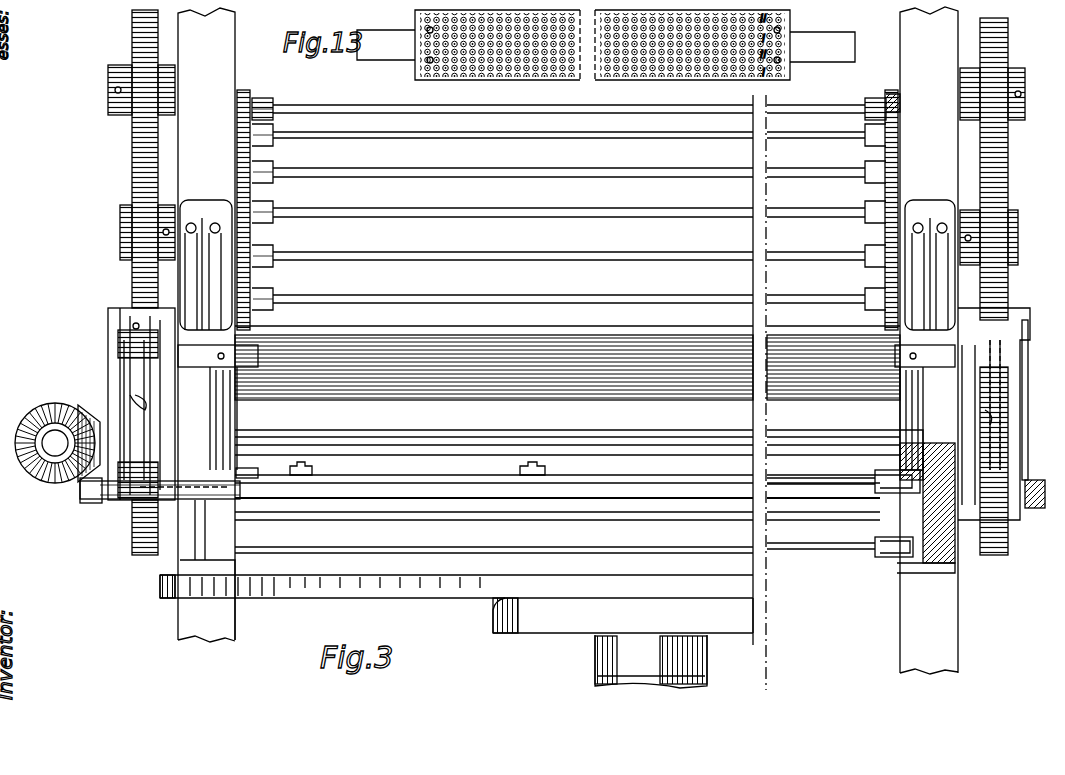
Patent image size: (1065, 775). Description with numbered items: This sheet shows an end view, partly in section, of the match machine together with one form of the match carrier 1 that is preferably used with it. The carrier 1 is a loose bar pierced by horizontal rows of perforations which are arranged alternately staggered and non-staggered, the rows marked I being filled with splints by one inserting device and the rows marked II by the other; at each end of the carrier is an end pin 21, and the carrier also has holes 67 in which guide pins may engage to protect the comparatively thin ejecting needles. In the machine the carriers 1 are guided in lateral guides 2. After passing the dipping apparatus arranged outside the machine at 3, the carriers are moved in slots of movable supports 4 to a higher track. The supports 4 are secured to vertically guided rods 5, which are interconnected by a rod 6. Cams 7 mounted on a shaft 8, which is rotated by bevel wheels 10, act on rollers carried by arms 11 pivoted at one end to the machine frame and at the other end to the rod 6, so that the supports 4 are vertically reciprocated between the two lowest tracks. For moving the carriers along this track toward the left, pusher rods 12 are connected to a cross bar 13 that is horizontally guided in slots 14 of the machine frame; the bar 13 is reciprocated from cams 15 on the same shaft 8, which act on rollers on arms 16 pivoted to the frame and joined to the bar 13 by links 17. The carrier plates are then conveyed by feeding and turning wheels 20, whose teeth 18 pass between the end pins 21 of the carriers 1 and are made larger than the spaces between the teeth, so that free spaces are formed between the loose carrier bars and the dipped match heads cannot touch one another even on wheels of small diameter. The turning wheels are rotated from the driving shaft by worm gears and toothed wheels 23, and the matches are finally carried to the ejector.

In FIG. 13, the match carrier 1 is at (632, 14).
In FIG. 3, the match carrier 1 is at (781, 545).
In FIG. 3, the lateral guide 2 is at (898, 100).
In FIG. 3, the dipping apparatus 3 is at (492, 598).
In FIG. 3, the movable support 4 is at (248, 468).
In FIG. 3, the vertically guided rod 5 is at (216, 400).
In FIG. 3, the rod 6 is at (515, 350).
In FIG. 3, the cam 7 is at (135, 400).
In FIG. 3, the shaft 8 is at (634, 437).
In FIG. 3, the bevel wheel 10 is at (80, 478).
In FIG. 3, the arm 11 is at (126, 372).
In FIG. 3, the pusher rod 12 is at (300, 465).
In FIG. 3, the cross bar 13 is at (385, 480).
In FIG. 3, the slot 14 is at (203, 506).
In FIG. 3, the cam 15 is at (900, 420).
In FIG. 3, the arm 16 is at (112, 356).
In FIG. 3, the link 17 is at (92, 504).
In FIG. 3, the tooth 18 is at (275, 212).
In FIG. 3, the feeding and turning wheel 20 is at (273, 104).
In FIG. 13, the end pin 21 is at (372, 30).
In FIG. 3, the end pin 21 is at (258, 190).
In FIG. 3, the toothed wheel 23 is at (132, 195).
In FIG. 13, the hole 67 is at (795, 80).